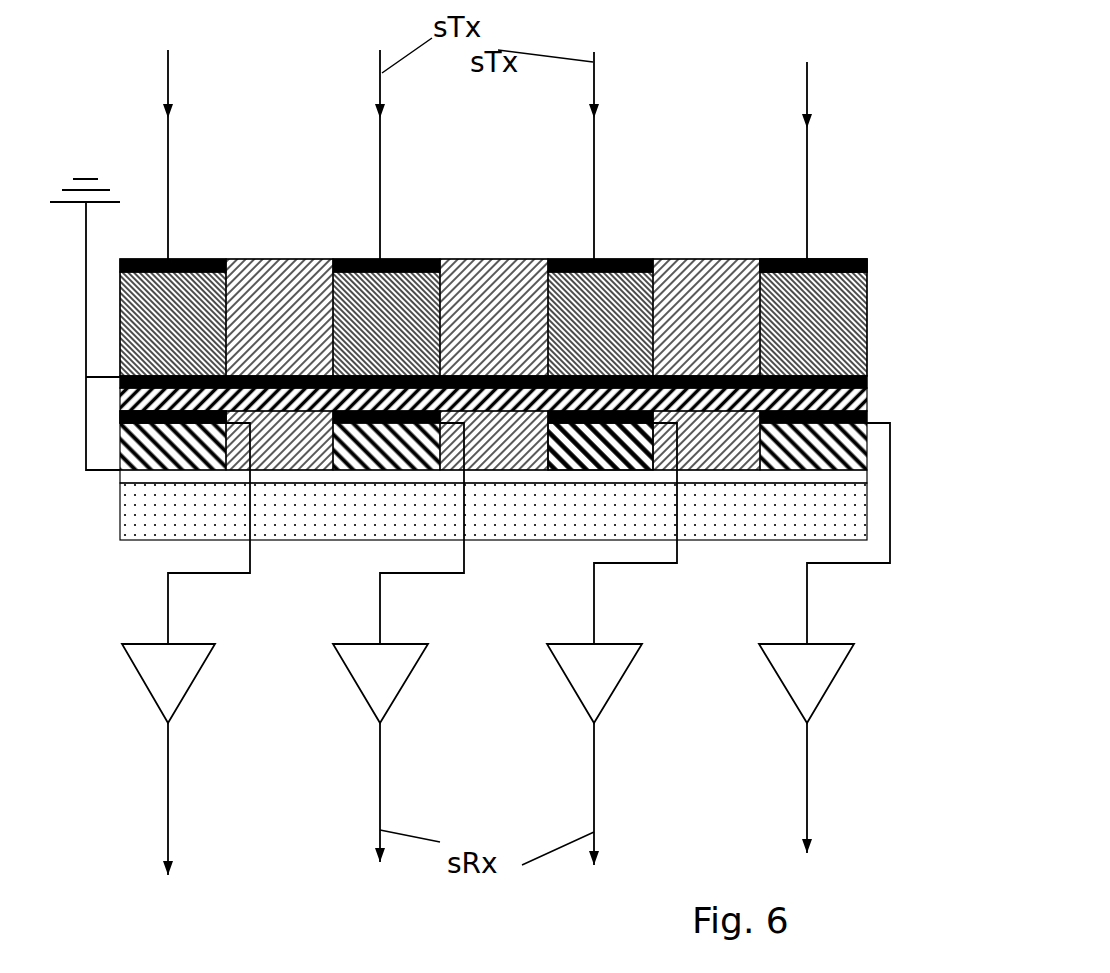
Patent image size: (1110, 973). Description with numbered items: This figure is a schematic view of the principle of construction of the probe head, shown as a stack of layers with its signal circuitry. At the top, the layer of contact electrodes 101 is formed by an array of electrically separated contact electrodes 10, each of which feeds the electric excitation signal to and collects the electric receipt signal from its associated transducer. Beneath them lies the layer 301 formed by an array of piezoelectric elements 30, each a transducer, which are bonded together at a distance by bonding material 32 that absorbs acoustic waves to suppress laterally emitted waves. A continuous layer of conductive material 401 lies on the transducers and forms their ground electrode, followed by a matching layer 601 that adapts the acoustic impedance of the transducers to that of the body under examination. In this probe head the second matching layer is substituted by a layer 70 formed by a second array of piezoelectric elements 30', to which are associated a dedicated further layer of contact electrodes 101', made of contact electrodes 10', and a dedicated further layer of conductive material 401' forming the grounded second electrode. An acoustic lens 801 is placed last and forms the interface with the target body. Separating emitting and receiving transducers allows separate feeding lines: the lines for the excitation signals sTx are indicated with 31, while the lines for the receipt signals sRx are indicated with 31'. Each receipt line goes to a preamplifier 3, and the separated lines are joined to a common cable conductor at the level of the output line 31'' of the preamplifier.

The preamplifier 3 is at (785, 693).
The contact electrode 10 is at (493, 229).
The contact electrode of second array 10' is at (147, 512).
The piezoelectric element 30 is at (493, 275).
The piezoelectric element of second array 30' is at (566, 523).
The signal feeding line 31 is at (487, 154).
The receipt signal feeding line 31' is at (529, 535).
The output line of preamplifier 31'' is at (487, 799).
The bonding material 32 is at (725, 433).
The layer formed by second array of piezoelectric elements 70 is at (869, 446).
The layer of contact electrodes 101 is at (855, 223).
The further layer of contact electrodes 101' is at (545, 407).
The layer of piezoelectric elements 301 is at (869, 323).
The layer of conductive material 401 is at (533, 349).
The further layer of conductive material 401' is at (544, 499).
The matching layer 601 is at (869, 397).
The acoustic lens 801 is at (845, 543).